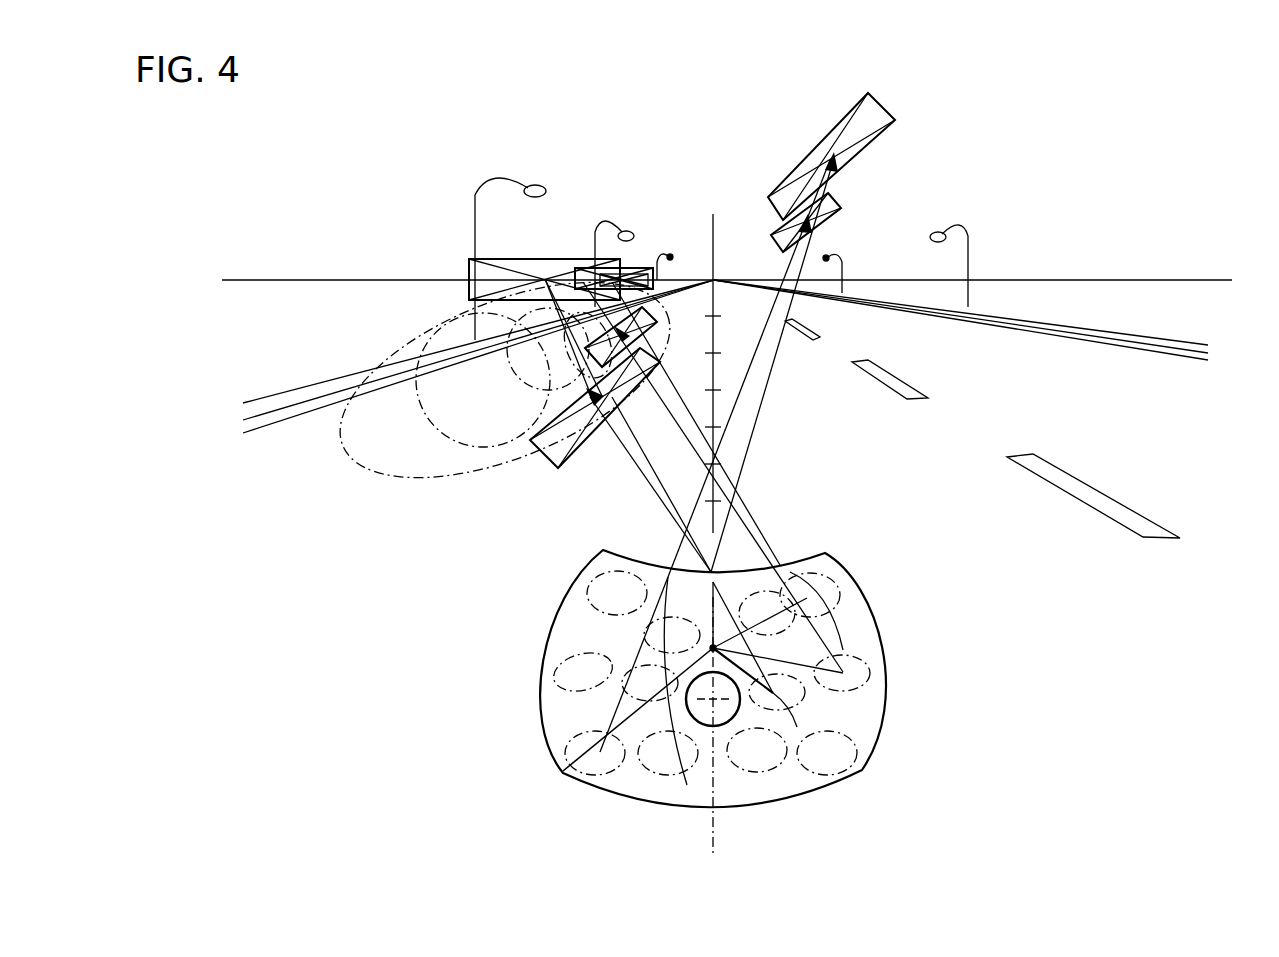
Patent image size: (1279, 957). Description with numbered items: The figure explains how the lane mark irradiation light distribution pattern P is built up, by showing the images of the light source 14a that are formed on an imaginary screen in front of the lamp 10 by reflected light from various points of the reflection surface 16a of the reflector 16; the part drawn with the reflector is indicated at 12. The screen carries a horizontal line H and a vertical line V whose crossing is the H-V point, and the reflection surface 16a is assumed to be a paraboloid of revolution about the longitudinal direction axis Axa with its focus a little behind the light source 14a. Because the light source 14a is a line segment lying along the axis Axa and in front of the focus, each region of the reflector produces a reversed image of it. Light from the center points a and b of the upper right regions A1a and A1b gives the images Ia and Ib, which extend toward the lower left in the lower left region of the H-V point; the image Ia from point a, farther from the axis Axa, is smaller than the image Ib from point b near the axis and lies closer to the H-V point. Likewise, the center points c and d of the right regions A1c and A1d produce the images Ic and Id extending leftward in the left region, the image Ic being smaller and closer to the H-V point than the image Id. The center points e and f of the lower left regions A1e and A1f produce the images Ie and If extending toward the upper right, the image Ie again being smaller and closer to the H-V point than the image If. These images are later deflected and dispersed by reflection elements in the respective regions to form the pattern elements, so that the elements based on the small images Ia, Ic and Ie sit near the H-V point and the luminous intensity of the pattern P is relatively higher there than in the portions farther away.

The vehicle headlamp 10 is at (782, 686).
The reflector 12 is at (710, 686).
The light source 14a is at (671, 559).
The lens 16 is at (547, 627).
The reflection surface 16a is at (560, 703).
The upper right region A1a is at (845, 562).
The upper right region A1b is at (775, 560).
The right region A1c is at (885, 677).
The right region A1d is at (887, 722).
The lower left region A1e is at (570, 782).
The lower left region A1f is at (662, 780).
The longitudinal direction axis Axa is at (722, 840).
The image of the light source Ia is at (652, 288).
The image of the light source Ib is at (596, 440).
The image of the light source Ic is at (642, 260).
The image of the light source Id is at (498, 258).
The image of the light source Ie is at (812, 226).
The image of the light source If is at (865, 157).
The lane mark irradiation light distribution pattern P is at (405, 474).
The H-V point H is at (729, 281).
The H-V point V is at (752, 375).
The center point a is at (855, 622).
The center point b is at (807, 650).
The center point c is at (866, 707).
The center point d is at (802, 728).
The center point e is at (563, 772).
The center point f is at (699, 793).